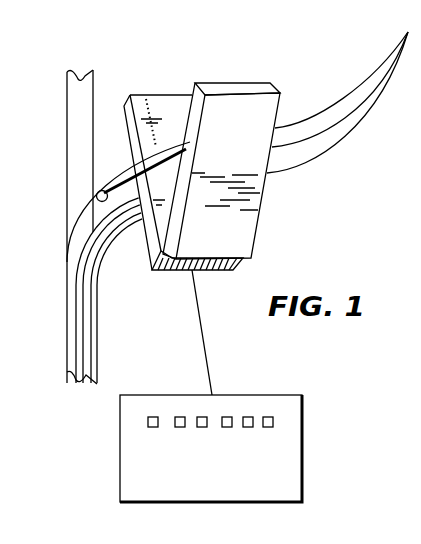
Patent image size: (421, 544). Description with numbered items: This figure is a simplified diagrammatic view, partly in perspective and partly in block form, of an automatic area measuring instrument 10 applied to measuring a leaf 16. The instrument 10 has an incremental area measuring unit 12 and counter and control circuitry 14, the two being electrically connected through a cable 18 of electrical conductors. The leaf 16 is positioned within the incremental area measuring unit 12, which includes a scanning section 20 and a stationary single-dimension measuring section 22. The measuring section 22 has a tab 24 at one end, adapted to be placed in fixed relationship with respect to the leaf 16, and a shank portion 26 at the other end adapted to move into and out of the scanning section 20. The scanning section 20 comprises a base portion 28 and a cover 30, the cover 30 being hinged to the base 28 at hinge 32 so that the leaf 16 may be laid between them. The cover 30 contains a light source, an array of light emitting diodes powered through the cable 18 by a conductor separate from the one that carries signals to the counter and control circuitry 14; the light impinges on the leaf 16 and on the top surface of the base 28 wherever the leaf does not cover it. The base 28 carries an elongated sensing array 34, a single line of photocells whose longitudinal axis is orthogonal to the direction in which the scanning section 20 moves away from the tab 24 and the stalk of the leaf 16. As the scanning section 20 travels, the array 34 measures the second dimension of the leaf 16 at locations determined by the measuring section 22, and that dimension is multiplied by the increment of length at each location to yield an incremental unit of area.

The automatic area measuring instrument 10 is at (318, 218).
The incremental area measuring unit 12 is at (275, 55).
The counter and control circuitry 14 is at (293, 437).
The leaf 16 is at (335, 133).
The cable 18 is at (212, 357).
The scanning section 20 is at (262, 227).
The stationary single-dimension measuring section 22 is at (110, 122).
The tab 24 is at (96, 195).
The shank portion 26 is at (170, 143).
The base portion 28 is at (210, 265).
The cover 30 is at (242, 98).
The hinge 32 is at (243, 259).
The elongated sensing array 34 is at (143, 99).